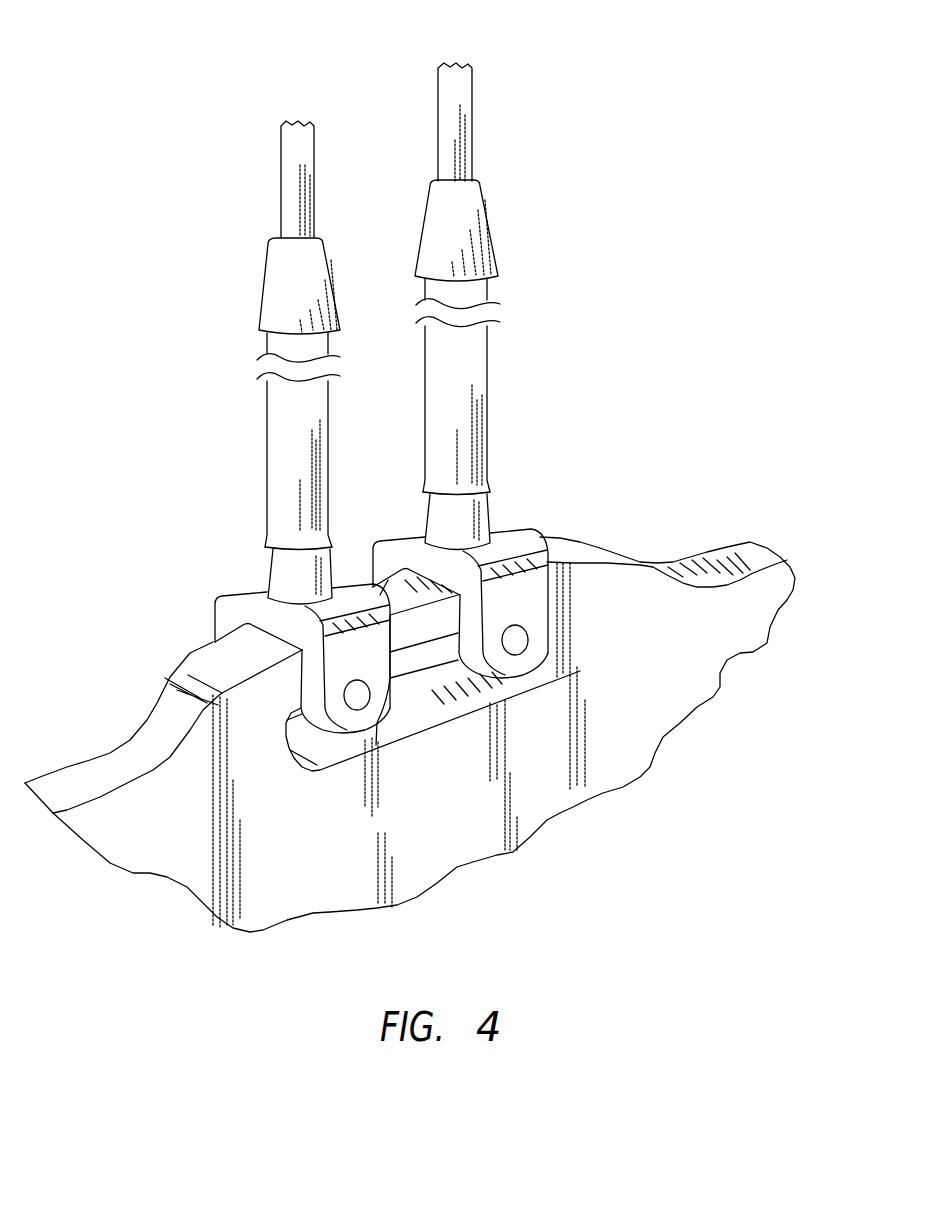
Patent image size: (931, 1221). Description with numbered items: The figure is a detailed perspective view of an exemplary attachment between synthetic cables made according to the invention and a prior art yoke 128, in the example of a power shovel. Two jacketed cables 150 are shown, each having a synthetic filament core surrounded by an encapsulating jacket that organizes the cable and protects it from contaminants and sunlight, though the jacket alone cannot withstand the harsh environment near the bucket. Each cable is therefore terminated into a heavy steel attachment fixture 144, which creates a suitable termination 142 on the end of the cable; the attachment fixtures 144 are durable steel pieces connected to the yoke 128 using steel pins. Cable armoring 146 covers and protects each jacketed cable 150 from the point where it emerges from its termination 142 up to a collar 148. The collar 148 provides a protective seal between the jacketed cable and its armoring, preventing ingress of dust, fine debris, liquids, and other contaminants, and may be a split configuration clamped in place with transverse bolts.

The yoke 128 is at (618, 598).
The termination 142 is at (485, 516).
The attachment fixture 144 is at (520, 608).
The cable armoring 146 is at (487, 378).
The collar 148 is at (495, 255).
The jacketed cable 150 is at (472, 152).